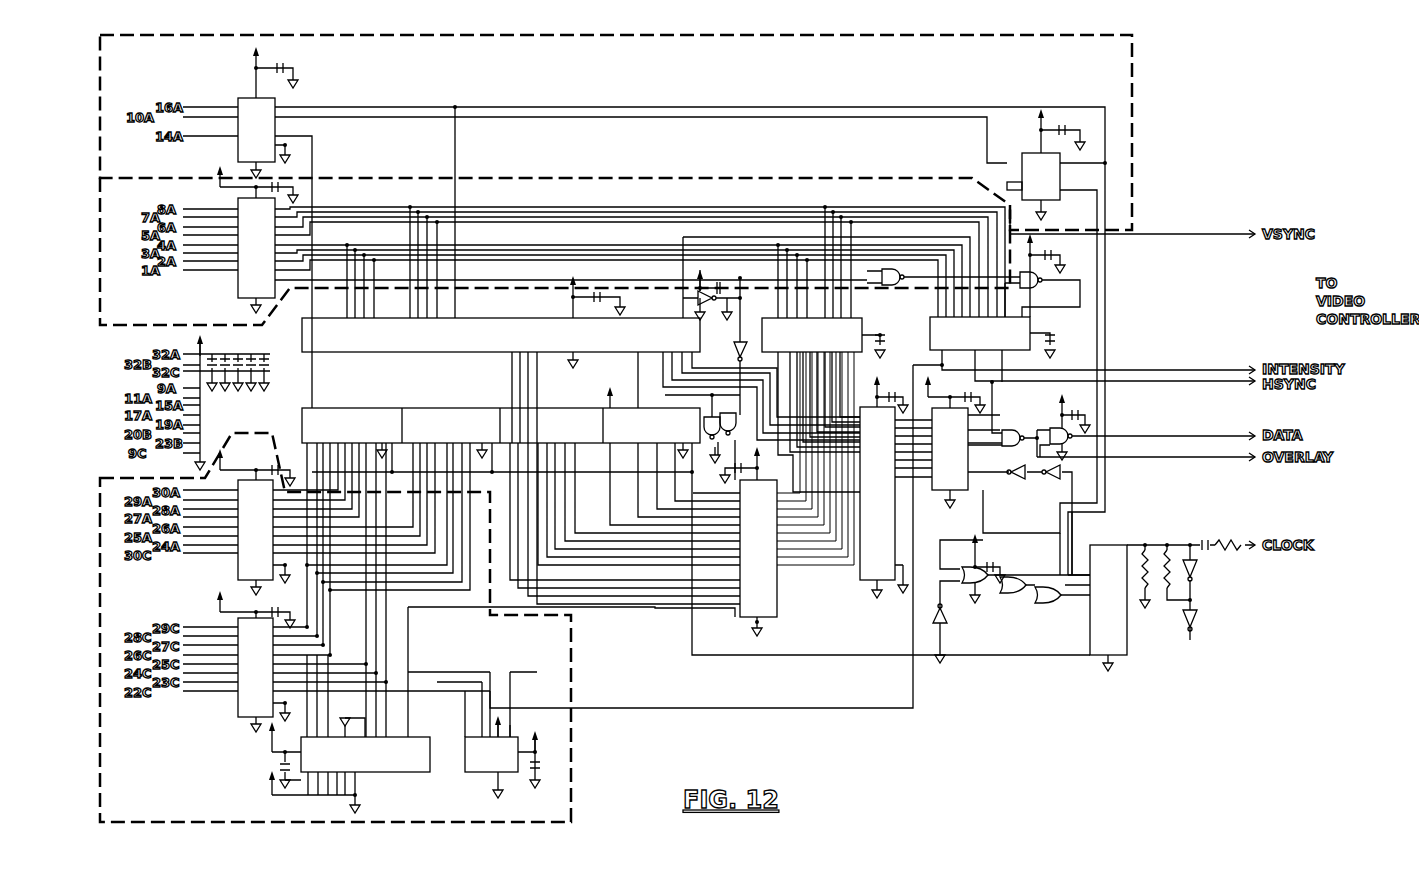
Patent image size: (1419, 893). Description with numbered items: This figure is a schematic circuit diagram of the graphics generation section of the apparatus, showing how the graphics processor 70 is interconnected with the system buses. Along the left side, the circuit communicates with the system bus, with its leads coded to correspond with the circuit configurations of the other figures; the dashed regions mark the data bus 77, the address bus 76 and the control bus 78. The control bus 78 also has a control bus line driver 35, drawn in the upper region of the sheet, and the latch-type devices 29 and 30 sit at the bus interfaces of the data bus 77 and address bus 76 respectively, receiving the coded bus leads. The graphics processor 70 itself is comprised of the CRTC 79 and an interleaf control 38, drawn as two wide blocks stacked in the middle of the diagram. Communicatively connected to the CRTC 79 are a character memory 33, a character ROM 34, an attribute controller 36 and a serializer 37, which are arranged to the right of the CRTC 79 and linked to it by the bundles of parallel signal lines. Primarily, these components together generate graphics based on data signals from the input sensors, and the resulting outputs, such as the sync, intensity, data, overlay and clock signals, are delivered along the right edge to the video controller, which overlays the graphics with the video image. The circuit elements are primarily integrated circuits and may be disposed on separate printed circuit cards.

The input latch 29 is at (257, 239).
The input latch 30 is at (256, 590).
The character memory 33 is at (748, 541).
The character ROM 34 is at (884, 487).
The control bus line driver 35 is at (268, 112).
The attribute controller 36 is at (997, 296).
The serializer 37 is at (955, 442).
The interleaf control 38 is at (501, 422).
The graphics processor 70 is at (993, 703).
The address bus 76 is at (335, 627).
The data bus 77 is at (555, 251).
The control bus 78 is at (616, 132).
The CRTC 79 is at (501, 322).